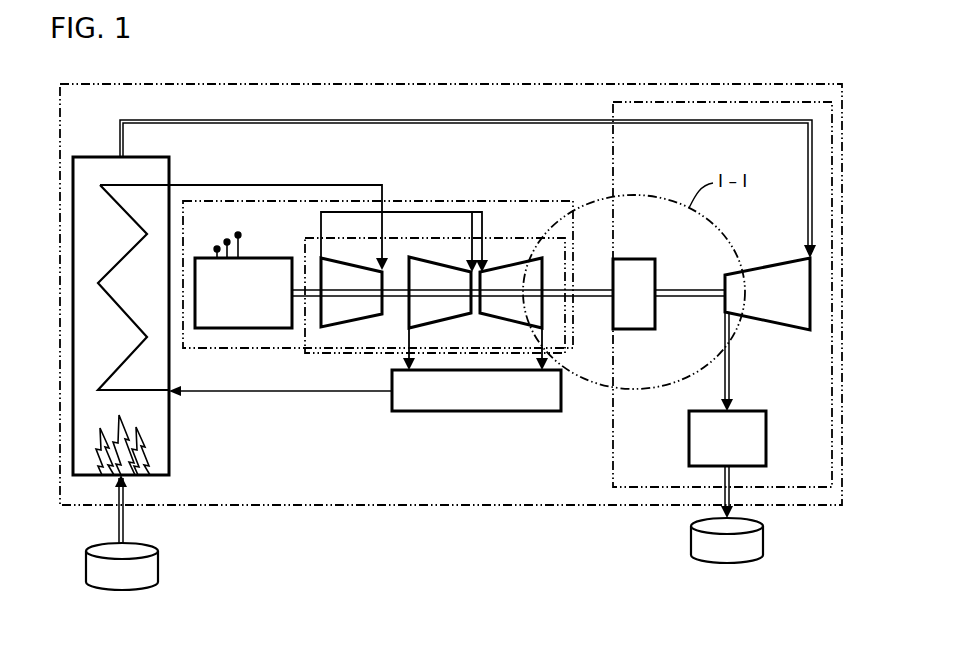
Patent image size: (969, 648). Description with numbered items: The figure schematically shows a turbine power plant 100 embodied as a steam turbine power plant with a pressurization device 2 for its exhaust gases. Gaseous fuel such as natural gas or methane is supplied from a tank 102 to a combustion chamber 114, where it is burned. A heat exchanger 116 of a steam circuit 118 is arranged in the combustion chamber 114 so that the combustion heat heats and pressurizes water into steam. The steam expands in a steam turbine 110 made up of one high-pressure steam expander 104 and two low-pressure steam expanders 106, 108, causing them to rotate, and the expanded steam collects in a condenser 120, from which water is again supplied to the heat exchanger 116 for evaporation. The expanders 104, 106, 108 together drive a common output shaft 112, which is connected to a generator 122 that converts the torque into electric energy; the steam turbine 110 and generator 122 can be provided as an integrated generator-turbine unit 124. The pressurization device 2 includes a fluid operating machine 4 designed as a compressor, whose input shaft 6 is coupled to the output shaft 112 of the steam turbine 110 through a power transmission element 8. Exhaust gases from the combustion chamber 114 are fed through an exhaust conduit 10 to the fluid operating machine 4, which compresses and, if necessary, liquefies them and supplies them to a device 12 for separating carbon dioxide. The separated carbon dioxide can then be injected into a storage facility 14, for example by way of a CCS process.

The turbine power plant 100 is at (420, 81).
The pressurization device 2 is at (686, 102).
The exhaust conduit 10 is at (632, 120).
The combustion chamber 114 is at (112, 422).
The heat exchanger 116 is at (110, 180).
The tank 102 is at (107, 584).
The steam circuit 118 is at (272, 398).
The generator-turbine unit 124 is at (452, 200).
The steam turbine 110 is at (522, 237).
The generator 122 is at (228, 302).
The output shaft 112 is at (592, 282).
The high-pressure steam expander 104 is at (352, 329).
The low-pressure steam expander 106 is at (449, 329).
The low-pressure steam expander 108 is at (512, 329).
The condenser 120 is at (462, 398).
The power transmission element 8 is at (628, 304).
The input shaft 6 is at (691, 284).
The fluid operating machine 4 is at (774, 302).
The device for separating carbon dioxide 12 is at (716, 450).
The storage facility 14 is at (716, 560).